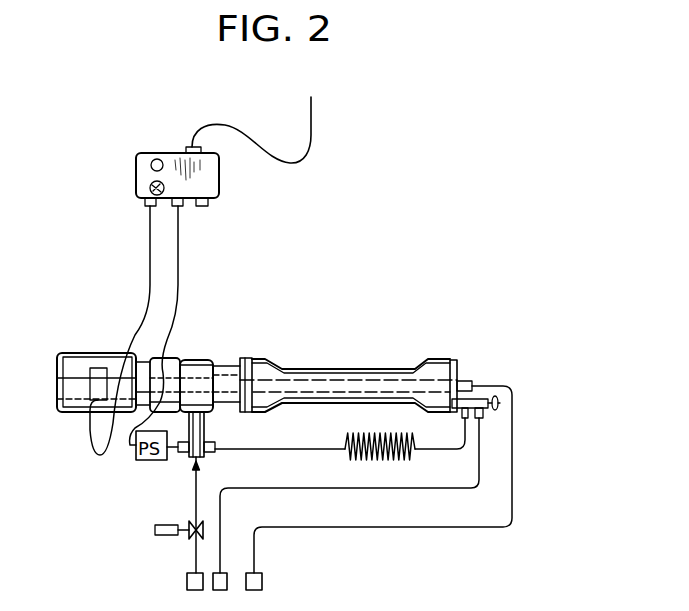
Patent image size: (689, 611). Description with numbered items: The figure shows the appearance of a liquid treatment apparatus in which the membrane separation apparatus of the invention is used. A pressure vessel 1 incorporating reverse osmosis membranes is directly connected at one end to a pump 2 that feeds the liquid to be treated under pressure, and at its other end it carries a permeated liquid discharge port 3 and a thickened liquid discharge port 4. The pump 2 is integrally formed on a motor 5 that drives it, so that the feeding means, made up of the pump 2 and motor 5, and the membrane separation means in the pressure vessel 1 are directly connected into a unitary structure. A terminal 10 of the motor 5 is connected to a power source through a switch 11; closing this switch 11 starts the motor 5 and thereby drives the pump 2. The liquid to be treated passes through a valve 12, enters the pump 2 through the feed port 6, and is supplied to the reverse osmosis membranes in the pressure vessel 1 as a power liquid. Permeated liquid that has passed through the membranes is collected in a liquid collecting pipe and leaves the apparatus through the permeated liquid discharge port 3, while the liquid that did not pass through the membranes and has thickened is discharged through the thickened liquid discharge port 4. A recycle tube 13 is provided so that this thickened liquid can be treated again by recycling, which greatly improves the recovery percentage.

The pressure vessel 1 is at (359, 366).
The pump 2 is at (197, 357).
The permeated liquid discharge port 3 is at (467, 381).
The thickened liquid discharge port 4 is at (484, 418).
The motor 5 is at (93, 352).
The feed port 6 is at (205, 432).
The terminal 10 is at (93, 392).
The switch 11 is at (218, 188).
The valve 12 is at (155, 530).
The recycle tube 13 is at (400, 458).